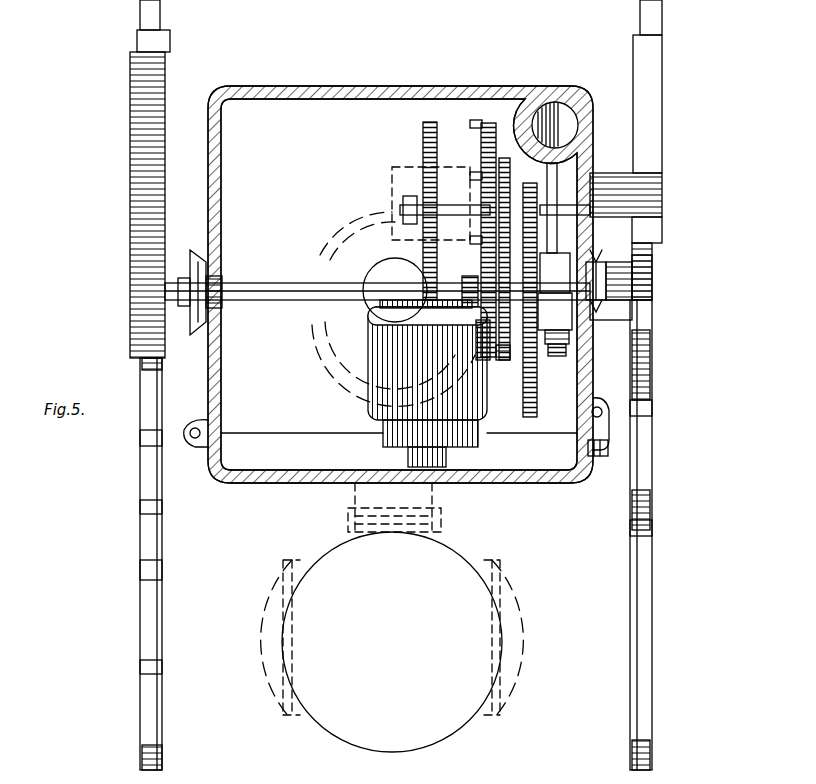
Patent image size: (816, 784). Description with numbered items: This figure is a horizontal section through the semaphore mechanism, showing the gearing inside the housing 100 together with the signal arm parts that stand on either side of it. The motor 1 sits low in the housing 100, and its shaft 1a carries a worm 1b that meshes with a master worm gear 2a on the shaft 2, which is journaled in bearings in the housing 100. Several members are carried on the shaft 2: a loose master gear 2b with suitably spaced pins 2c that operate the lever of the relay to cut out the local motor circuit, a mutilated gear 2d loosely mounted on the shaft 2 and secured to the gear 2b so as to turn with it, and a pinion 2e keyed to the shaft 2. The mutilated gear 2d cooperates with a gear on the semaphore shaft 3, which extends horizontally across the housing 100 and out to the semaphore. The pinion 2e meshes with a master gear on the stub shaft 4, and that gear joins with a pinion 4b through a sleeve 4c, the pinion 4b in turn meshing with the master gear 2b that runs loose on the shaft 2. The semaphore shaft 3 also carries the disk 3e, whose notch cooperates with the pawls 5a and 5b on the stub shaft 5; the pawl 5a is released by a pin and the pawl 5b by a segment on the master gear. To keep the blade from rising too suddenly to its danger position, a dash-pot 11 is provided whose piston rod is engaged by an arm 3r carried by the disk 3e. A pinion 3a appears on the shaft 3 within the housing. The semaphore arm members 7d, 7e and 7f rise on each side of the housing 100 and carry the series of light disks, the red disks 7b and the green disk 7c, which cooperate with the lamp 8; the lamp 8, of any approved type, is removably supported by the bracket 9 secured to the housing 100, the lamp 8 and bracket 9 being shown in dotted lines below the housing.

The housing 100 is at (270, 92).
The dash-pot 11 is at (582, 116).
The motor 1 is at (403, 364).
The motor shaft 1a is at (405, 254).
The worm 1b is at (392, 236).
The shaft 2 is at (447, 208).
The master worm gear 2a is at (432, 124).
The loose master gear 2b is at (500, 105).
The pins 2c is at (490, 124).
The mutilated gear 2d is at (506, 163).
The pinion 2e is at (557, 195).
The semaphore shaft 3 is at (296, 284).
The pinion on shaft 3a is at (470, 285).
The arm 3r is at (592, 228).
The disk 3e is at (569, 350).
The stub shaft 4 is at (534, 354).
The pinion 4b is at (447, 372).
The sleeve 4c is at (500, 360).
The stub shaft 5 is at (652, 292).
The pawl 5a is at (640, 272).
The pawl 5b is at (600, 318).
The light disks 7b is at (163, 510).
The light disk 7c is at (163, 442).
The left arm rack 7d is at (130, 250).
The arm rod section 7e is at (140, 572).
The right arm 7f is at (652, 488).
The lamp 8 is at (352, 740).
The bracket 9 is at (393, 522).